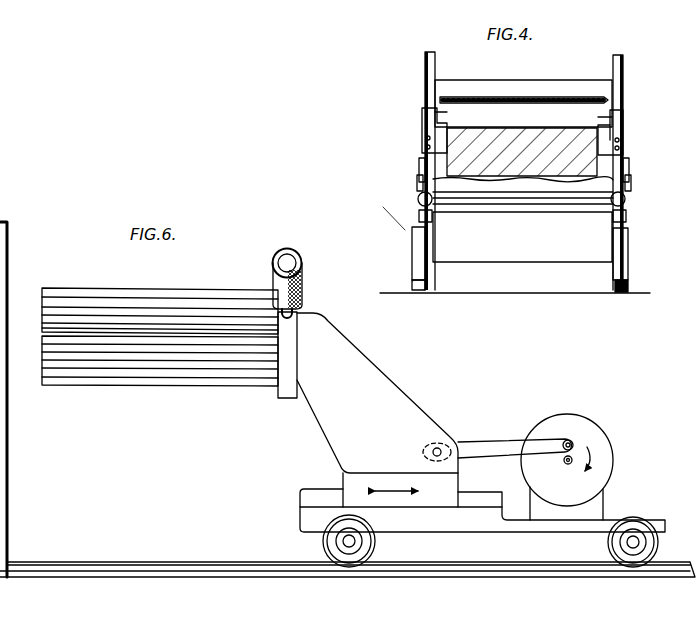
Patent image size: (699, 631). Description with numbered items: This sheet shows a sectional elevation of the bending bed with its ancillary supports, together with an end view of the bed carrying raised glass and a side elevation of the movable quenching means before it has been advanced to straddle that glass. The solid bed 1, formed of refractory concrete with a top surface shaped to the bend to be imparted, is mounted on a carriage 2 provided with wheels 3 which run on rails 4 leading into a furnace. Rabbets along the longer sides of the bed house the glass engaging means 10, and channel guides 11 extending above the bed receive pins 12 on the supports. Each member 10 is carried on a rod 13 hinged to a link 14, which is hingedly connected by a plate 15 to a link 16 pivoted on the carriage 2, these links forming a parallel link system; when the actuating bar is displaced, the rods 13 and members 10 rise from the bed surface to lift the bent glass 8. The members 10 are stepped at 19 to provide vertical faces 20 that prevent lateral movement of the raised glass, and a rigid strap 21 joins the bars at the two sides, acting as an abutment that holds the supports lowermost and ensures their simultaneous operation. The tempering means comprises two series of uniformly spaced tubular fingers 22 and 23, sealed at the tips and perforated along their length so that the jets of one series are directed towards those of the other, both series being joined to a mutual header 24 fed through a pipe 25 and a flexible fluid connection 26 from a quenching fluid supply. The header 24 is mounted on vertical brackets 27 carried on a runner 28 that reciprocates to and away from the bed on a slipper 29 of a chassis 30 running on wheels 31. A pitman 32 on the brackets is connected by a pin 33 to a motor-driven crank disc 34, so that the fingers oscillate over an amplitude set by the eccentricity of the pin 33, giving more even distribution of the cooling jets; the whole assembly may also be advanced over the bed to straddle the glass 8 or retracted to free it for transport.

In FIG. 4, the bed 1 is at (520, 115).
In FIG. 4, the carriage 2 is at (443, 240).
In FIG. 4, the wheels 3 is at (628, 250).
In FIG. 4, the rails 4 is at (427, 285).
In FIG. 6, the rails 4 is at (122, 572).
In FIG. 4, the glass 8 is at (600, 98).
In FIG. 4, the glass engaging means 10 is at (422, 142).
In FIG. 4, the channel guides 11 is at (425, 63).
In FIG. 4, the pins 12 is at (620, 140).
In FIG. 4, the rod 13 is at (629, 167).
In FIG. 4, the link 14 is at (631, 183).
In FIG. 4, the plate 15 is at (417, 197).
In FIG. 4, the link 16 is at (626, 220).
In FIG. 4, the step 19 is at (427, 117).
In FIG. 4, the vertical faces 20 is at (433, 112).
In FIG. 4, the rigid strap 21 is at (570, 198).
In FIG. 6, the tubular fingers 22 is at (147, 313).
In FIG. 6, the tubular fingers 23 is at (200, 365).
In FIG. 6, the header 24 is at (278, 337).
In FIG. 6, the pipe 25 is at (300, 312).
In FIG. 6, the flexible fluid connection 26 is at (287, 263).
In FIG. 6, the vertical brackets 27 is at (358, 387).
In FIG. 6, the runner 28 is at (388, 487).
In FIG. 6, the slipper 29 is at (318, 500).
In FIG. 6, the chassis 30 is at (318, 521).
In FIG. 6, the wheels 31 is at (355, 540).
In FIG. 6, the pitman 32 is at (488, 443).
In FIG. 6, the pin 33 is at (568, 440).
In FIG. 6, the crank disc 34 is at (585, 442).